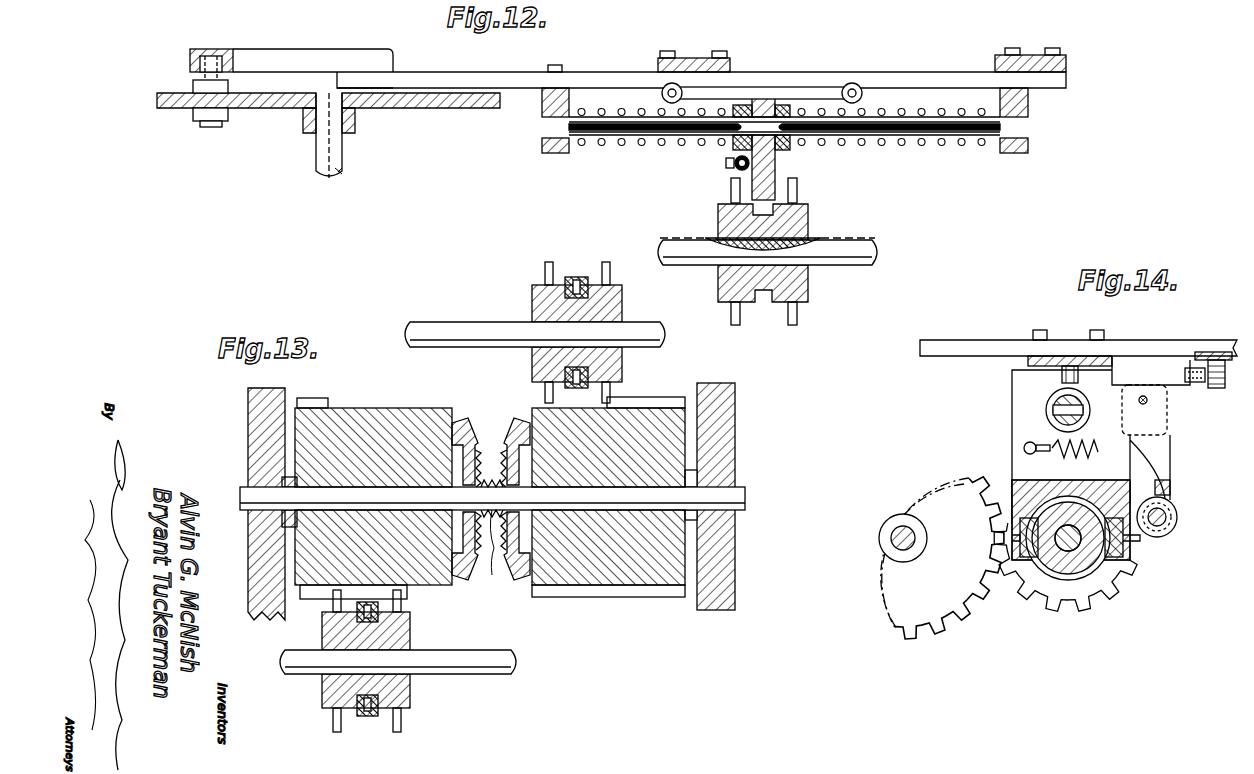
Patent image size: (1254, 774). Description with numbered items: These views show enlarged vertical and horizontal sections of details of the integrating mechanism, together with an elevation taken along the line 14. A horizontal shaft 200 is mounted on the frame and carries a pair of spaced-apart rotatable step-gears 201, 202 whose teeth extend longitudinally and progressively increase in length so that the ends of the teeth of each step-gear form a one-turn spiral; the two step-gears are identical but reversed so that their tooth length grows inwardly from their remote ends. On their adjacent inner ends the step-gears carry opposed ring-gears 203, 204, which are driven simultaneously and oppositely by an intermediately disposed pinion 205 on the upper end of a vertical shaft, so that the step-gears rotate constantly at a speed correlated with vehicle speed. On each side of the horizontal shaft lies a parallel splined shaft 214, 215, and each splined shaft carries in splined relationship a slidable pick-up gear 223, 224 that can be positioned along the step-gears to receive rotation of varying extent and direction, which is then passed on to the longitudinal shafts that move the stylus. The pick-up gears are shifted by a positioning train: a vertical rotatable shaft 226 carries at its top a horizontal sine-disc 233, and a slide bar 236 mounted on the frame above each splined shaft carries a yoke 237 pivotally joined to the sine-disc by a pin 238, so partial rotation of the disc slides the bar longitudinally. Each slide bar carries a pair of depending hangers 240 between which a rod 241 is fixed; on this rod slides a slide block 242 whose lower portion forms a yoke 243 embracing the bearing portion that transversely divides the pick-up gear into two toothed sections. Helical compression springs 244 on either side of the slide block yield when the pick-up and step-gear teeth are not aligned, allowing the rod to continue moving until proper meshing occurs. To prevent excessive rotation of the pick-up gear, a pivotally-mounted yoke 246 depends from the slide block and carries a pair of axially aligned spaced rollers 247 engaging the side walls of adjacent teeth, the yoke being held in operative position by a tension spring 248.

In FIG. 12, the section line 14 is at (728, 173).
In FIG. 13, the horizontal shaft 200 is at (244, 490).
In FIG. 14, the horizontal shaft 200 is at (910, 548).
In FIG. 13, the step-gear 201 is at (616, 575).
In FIG. 13, the step-gear 202 is at (375, 418).
In FIG. 14, the step-gear 202 is at (970, 626).
In FIG. 13, the ring-gear 203 is at (510, 577).
In FIG. 13, the ring-gear 204 is at (460, 577).
In FIG. 13, the pinion 205 is at (492, 548).
In FIG. 12, the splined shaft 214 is at (845, 252).
In FIG. 13, the splined shaft 214 is at (452, 677).
In FIG. 13, the splined shaft 215 is at (478, 325).
In FIG. 12, the pick-up gear 223 is at (798, 316).
In FIG. 13, the pick-up gear 223 is at (336, 733).
In FIG. 14, the pick-up gear 223 is at (1093, 598).
In FIG. 13, the pick-up gear 224 is at (545, 270).
In FIG. 12, the vertical rotatable shaft 226 is at (343, 162).
In FIG. 12, the sine-disc 233 is at (487, 110).
In FIG. 12, the slide bar 236 is at (882, 76).
In FIG. 14, the slide bar 236 is at (1062, 345).
In FIG. 12, the yoke 237 is at (190, 52).
In FIG. 12, the pin 238 is at (200, 78).
In FIG. 12, the hanger 240 is at (548, 155).
In FIG. 12, the rod 241 is at (1020, 128).
In FIG. 14, the rod 241 is at (1047, 411).
In FIG. 12, the slide block 242 is at (765, 90).
In FIG. 14, the slide block 242 is at (1012, 390).
In FIG. 12, the yoke 243 is at (796, 196).
In FIG. 13, the yoke 243 is at (580, 278).
In FIG. 14, the yoke 243 is at (1012, 491).
In FIG. 12, the helical compression spring 244 is at (912, 148).
In FIG. 14, the helical compression spring 244 is at (1088, 416).
In FIG. 14, the pivotally-mounted yoke 246 is at (1160, 452).
In FIG. 14, the roller 247 is at (1168, 533).
In FIG. 12, the tension spring 248 is at (733, 167).
In FIG. 14, the tension spring 248 is at (1030, 457).